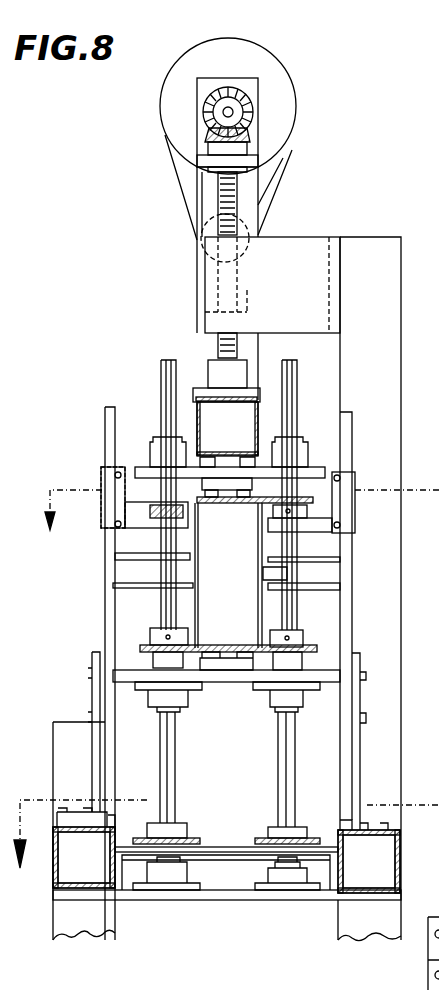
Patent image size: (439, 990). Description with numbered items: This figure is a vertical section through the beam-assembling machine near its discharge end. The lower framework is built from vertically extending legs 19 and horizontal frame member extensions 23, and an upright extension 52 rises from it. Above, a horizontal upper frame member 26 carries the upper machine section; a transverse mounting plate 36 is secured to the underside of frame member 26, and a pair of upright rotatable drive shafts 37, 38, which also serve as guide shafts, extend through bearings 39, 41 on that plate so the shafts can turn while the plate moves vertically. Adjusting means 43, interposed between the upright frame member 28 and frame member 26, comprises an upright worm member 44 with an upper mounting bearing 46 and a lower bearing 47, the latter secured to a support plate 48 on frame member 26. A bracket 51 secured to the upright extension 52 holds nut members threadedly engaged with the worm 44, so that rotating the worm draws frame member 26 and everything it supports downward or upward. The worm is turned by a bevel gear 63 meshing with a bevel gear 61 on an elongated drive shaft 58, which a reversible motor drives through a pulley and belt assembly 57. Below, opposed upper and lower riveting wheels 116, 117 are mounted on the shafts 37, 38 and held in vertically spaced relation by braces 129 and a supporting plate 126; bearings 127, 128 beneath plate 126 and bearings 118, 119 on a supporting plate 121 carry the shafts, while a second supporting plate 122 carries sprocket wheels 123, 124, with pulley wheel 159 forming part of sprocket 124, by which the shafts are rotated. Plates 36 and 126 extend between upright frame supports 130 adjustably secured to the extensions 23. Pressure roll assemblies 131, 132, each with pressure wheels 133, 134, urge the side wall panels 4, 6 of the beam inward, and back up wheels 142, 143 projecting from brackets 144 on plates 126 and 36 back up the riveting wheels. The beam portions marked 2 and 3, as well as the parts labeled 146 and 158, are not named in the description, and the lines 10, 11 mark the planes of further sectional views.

The chamber 2 is at (228, 575).
The lower chamber portion 3 is at (238, 642).
The side wall panel 4 is at (280, 555).
The side wall panel 6 is at (190, 572).
The section line 10 is at (221, 524).
The section line 11 is at (221, 847).
The legs 19 is at (75, 938).
The horizontal extensions 23 is at (72, 890).
The upper frame member 26 is at (198, 390).
The upright frame member 28 is at (252, 200).
The transverse mounting plate 36 is at (120, 448).
The drive shaft 37 is at (160, 370).
The drive shaft 38 is at (297, 395).
The bearing 39 is at (153, 445).
The bearing 41 is at (302, 425).
The adjustment means 43 is at (175, 232).
The worm member 44 is at (237, 212).
The upper bearing 46 is at (245, 150).
The lower bearing 47 is at (232, 372).
The support plate 48 is at (245, 397).
The bracket 51 is at (290, 280).
The upright extension 52 is at (400, 354).
The pulley and belt assembly 57 is at (291, 76).
The drive shaft 58 is at (236, 112).
The bevel gear 61 is at (228, 90).
The bevel gear 63 is at (250, 134).
The upper riveting wheels 116 is at (125, 505).
The lower riveting wheels 117 is at (150, 638).
The bearing 118 is at (160, 880).
The bearing 119 is at (290, 880).
The supporting plate 121 is at (212, 900).
The second supporting plate 122 is at (236, 850).
The sprocket wheel 123 is at (180, 830).
The sprocket wheel 124 is at (275, 835).
The supporting plate 126 is at (215, 672).
The bearing 127 is at (166, 700).
The bearing 128 is at (300, 707).
The braces 129 is at (130, 526).
The upright frame supports 130 is at (115, 575).
The pressure roll assembly 131 is at (130, 590).
The pressure roll assembly 132 is at (340, 588).
The pressure wheel 133 is at (178, 600).
The pressure wheel 134 is at (296, 585).
The back up wheel 142 is at (228, 660).
The back up wheel 143 is at (256, 640).
The bracket 144 is at (220, 480).
The boss 146 is at (240, 682).
The block 158 is at (187, 836).
The pulley wheel 159 is at (305, 838).